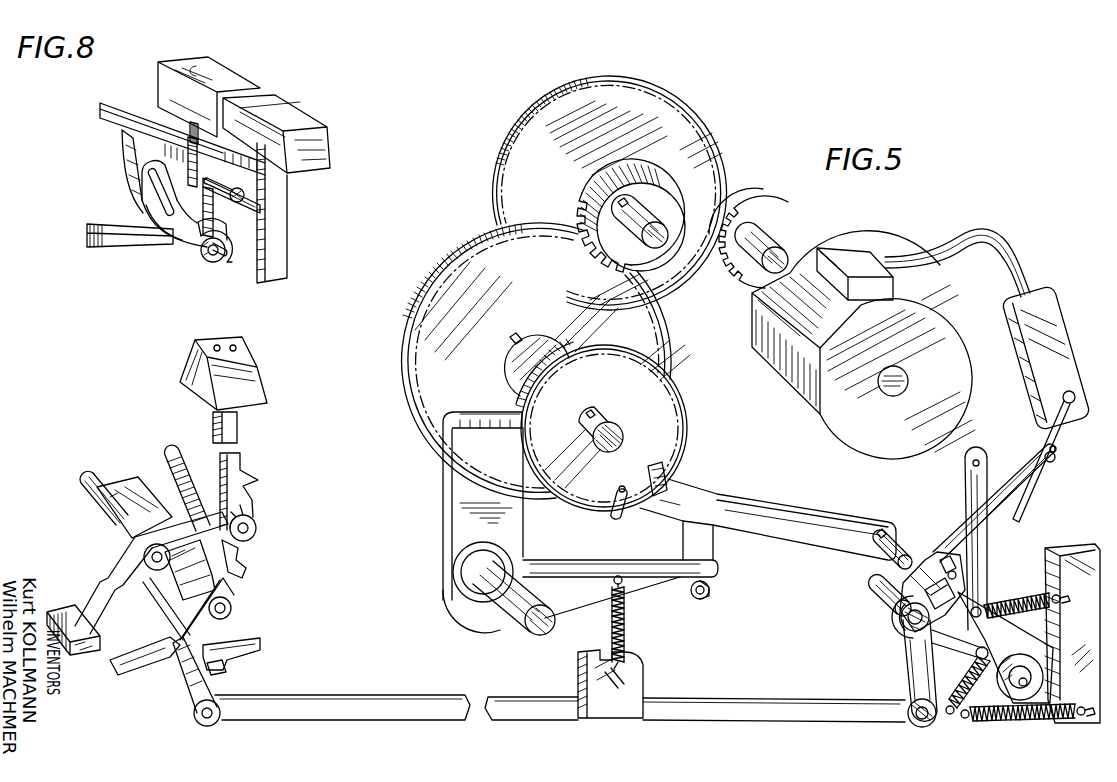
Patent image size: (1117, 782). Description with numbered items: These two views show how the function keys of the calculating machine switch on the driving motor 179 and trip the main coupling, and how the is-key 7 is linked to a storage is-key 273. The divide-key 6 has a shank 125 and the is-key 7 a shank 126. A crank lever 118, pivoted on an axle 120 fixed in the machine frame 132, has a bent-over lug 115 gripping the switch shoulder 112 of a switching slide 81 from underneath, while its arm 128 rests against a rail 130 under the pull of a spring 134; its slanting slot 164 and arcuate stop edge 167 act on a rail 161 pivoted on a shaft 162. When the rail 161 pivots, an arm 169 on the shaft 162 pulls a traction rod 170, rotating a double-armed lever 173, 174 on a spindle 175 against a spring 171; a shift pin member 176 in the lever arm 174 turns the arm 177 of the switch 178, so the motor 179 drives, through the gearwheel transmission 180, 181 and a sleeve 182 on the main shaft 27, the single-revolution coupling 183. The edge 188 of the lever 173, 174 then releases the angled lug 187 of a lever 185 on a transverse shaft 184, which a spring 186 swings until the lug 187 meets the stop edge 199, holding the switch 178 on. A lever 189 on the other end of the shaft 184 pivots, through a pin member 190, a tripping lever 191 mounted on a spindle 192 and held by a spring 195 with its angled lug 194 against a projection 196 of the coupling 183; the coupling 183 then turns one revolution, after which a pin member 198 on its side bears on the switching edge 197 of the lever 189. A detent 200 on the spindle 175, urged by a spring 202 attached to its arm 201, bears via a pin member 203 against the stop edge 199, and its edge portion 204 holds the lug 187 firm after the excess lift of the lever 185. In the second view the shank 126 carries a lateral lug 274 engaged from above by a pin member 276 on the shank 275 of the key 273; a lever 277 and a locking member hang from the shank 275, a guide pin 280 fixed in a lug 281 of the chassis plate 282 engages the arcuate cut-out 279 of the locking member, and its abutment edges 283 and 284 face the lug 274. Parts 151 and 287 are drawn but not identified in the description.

In FIG. 8, the storage is-key 273 is at (229, 76).
In FIG. 8, the is-key 7 is at (300, 117).
In FIG. 8, the chassis plate 282 is at (120, 107).
In FIG. 8, the shank of storage is-key 275 is at (193, 130).
In FIG. 8, the lug of chassis plate 281 is at (124, 136).
In FIG. 8, the arcuate cut-out 279 is at (150, 176).
In FIG. 8, the abutment edge 283 is at (145, 209).
In FIG. 8, the guide pin 280 is at (172, 228).
In FIG. 8, the roller 287 is at (197, 250).
In FIG. 8, the abutment edge 284 is at (222, 257).
In FIG. 8, the lever 277 is at (87, 243).
In FIG. 8, the lateral lug 274 is at (262, 212).
In FIG. 8, the pin member 276 is at (245, 196).
In FIG. 8, the shank of is-key 126 is at (275, 257).
In FIG. 5, the gearwheel transmission 181 is at (598, 260).
In FIG. 5, the gearwheel transmission 180 is at (717, 263).
In FIG. 5, the sleeve 182 is at (508, 349).
In FIG. 5, the angled lug 194 is at (470, 410).
In FIG. 5, the projection 196 is at (511, 443).
In FIG. 5, the tripping lever 191 is at (562, 577).
In FIG. 5, the spindle 192 is at (508, 631).
In FIG. 5, the single-revolution coupling 183 is at (671, 420).
In FIG. 5, the main shaft 27 is at (594, 443).
In FIG. 5, the switching edge 197 is at (673, 471).
In FIG. 5, the pin member 198 is at (622, 500).
In FIG. 5, the lever 189 is at (783, 530).
In FIG. 5, the pin member 190 is at (709, 592).
In FIG. 5, the spring 195 is at (628, 622).
In FIG. 5, the machine frame 132 is at (644, 680).
In FIG. 5, the traction rod 170 is at (367, 698).
In FIG. 5, the driving motor 179 is at (835, 428).
In FIG. 5, the switch 178 is at (1063, 323).
In FIG. 5, the arm of switch 177 is at (1046, 486).
In FIG. 5, the shift pin member 176 is at (1055, 457).
In FIG. 5, the lever arm 174 is at (1000, 483).
In FIG. 5, the detent 200 is at (920, 558).
In FIG. 5, the pin member 203 is at (941, 552).
In FIG. 5, the stop edge 199 is at (950, 565).
In FIG. 5, the edge 188 is at (947, 587).
In FIG. 5, the edge portion 204 is at (879, 591).
In FIG. 5, the angled lug 187 is at (893, 613).
In FIG. 5, the spindle 175 is at (902, 618).
In FIG. 5, the arm of detent 201 is at (953, 643).
In FIG. 5, the lever arm 173 is at (912, 710).
In FIG. 5, the lever 185 is at (1007, 645).
In FIG. 5, the shaft 184 is at (1022, 690).
In FIG. 5, the spring 186 is at (1015, 604).
In FIG. 5, the spring 202 is at (958, 677).
In FIG. 5, the spring 171 is at (983, 720).
In FIG. 5, the divide-key 6 is at (241, 385).
In FIG. 5, the shank of divide-key 125 is at (236, 435).
In FIG. 5, the bracket 151 is at (238, 468).
In FIG. 5, the slanting slot 164 is at (256, 534).
In FIG. 5, the arcuate stop edge 167 is at (246, 552).
In FIG. 5, the spring 134 is at (172, 455).
In FIG. 5, the rail 161 is at (115, 487).
In FIG. 5, the axle 120 is at (108, 520).
In FIG. 5, the crank lever 118 is at (125, 556).
In FIG. 5, the arm of crank lever 128 is at (90, 600).
In FIG. 5, the rail 130 is at (95, 627).
In FIG. 5, the shaft 162 is at (231, 599).
In FIG. 5, the arm 169 is at (211, 624).
In FIG. 5, the switch shoulder 112 is at (139, 668).
In FIG. 5, the switching slide 81 is at (258, 642).
In FIG. 5, the bent-over lug 115 is at (212, 672).